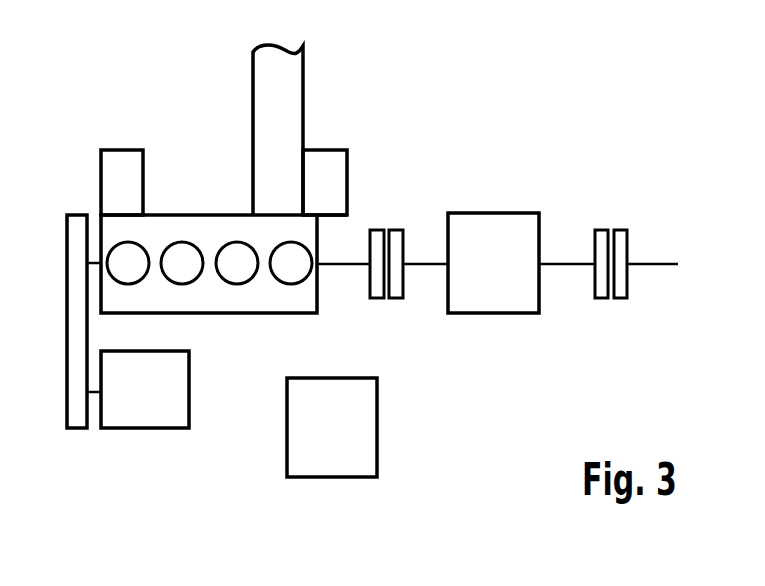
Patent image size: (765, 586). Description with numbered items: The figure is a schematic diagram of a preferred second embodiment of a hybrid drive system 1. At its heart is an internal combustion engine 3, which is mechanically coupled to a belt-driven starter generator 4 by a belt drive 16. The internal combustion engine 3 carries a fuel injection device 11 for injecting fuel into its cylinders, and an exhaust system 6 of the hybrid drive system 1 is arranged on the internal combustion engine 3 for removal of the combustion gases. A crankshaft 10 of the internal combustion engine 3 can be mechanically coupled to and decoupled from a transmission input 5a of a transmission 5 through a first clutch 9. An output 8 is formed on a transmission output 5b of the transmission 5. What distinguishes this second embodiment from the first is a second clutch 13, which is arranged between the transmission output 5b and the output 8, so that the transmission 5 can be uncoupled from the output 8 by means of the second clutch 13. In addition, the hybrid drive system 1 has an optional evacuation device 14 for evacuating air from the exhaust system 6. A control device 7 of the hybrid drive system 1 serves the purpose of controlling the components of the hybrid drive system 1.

The hybrid drive system 1 is at (560, 102).
The internal combustion engine 3 is at (187, 222).
The belt-driven starter generator 4 is at (143, 418).
The transmission 5 is at (492, 225).
The transmission input 5a is at (424, 262).
The transmission output 5b is at (567, 262).
The exhaust system 6 is at (267, 82).
The control device 7 is at (363, 430).
The output 8 is at (652, 262).
The first clutch 9 is at (383, 225).
The crankshaft 10 is at (343, 268).
The fuel injection device 11 is at (120, 163).
The second clutch 13 is at (607, 226).
The evacuation device 14 is at (325, 160).
The belt drive 16 is at (72, 222).